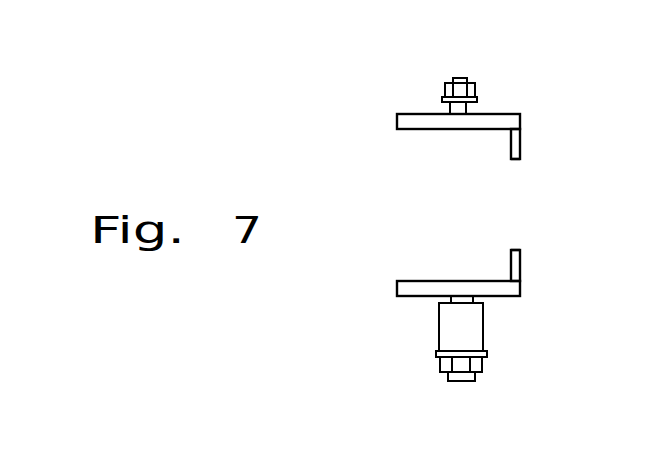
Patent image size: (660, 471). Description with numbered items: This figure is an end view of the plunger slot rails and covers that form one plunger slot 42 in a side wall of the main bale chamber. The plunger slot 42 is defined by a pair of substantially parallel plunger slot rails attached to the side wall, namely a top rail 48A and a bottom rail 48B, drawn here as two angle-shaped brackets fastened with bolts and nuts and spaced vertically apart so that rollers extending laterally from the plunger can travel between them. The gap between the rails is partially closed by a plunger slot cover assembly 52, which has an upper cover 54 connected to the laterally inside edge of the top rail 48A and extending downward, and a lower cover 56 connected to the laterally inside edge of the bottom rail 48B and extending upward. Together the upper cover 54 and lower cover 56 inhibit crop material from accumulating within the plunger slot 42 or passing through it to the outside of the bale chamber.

The plunger slot 42 is at (298, 392).
The top rail 48A is at (490, 113).
The bottom rail 48B is at (498, 297).
The plunger slot cover assembly 52 is at (530, 163).
The upper cover 54 is at (521, 143).
The lower cover 56 is at (521, 265).